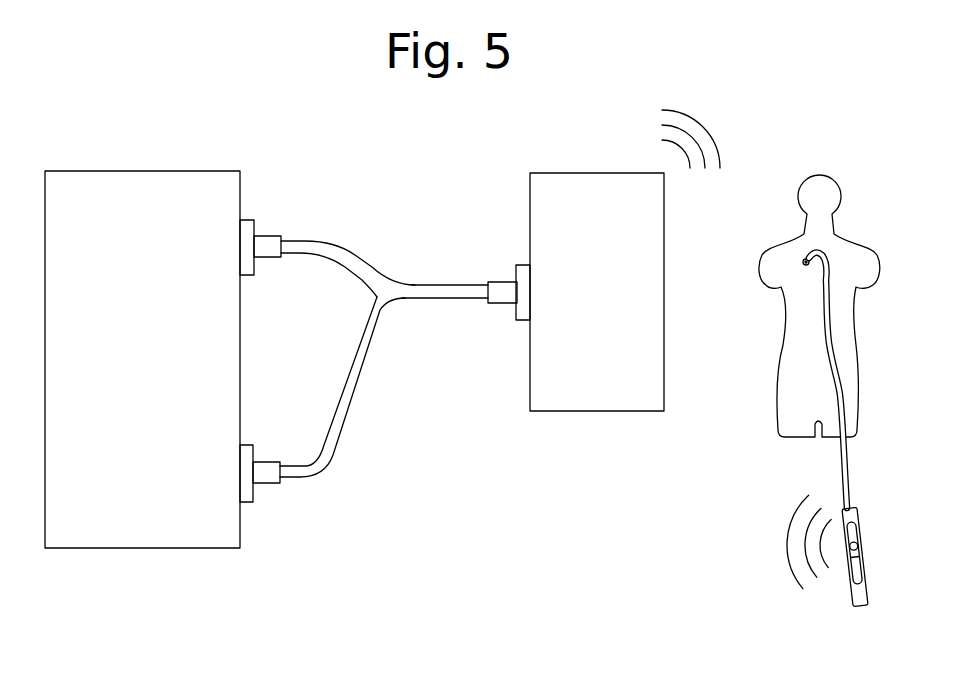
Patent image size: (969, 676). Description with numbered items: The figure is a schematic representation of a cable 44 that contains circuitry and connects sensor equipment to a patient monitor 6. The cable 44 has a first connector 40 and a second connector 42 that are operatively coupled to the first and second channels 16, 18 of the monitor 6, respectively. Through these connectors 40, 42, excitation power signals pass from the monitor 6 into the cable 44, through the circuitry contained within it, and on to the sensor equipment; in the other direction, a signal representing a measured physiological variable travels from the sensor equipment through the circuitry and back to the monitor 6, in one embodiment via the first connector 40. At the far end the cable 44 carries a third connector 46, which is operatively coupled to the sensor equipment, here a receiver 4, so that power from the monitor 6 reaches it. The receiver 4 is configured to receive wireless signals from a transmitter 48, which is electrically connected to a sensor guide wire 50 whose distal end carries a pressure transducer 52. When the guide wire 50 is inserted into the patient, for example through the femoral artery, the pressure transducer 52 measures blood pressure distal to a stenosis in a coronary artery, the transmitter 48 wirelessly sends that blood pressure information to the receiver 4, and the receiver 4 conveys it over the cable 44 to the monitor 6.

The receiver 4 is at (598, 173).
The monitor 6 is at (143, 171).
The first channel 16 is at (249, 502).
The second channel 18 is at (247, 220).
The first connector 40 is at (272, 485).
The second connector 42 is at (270, 235).
The cable 44 is at (431, 283).
The third connector 46 is at (501, 282).
The transmitter 48 is at (850, 594).
The sensor guide wire 50 is at (840, 470).
The pressure transducer 52 is at (803, 259).